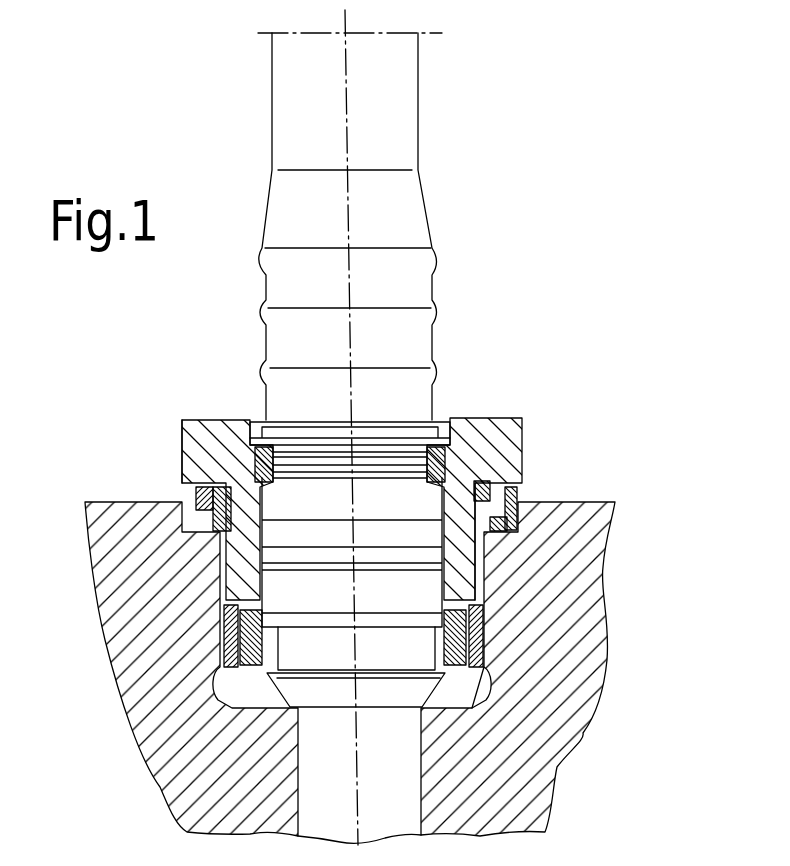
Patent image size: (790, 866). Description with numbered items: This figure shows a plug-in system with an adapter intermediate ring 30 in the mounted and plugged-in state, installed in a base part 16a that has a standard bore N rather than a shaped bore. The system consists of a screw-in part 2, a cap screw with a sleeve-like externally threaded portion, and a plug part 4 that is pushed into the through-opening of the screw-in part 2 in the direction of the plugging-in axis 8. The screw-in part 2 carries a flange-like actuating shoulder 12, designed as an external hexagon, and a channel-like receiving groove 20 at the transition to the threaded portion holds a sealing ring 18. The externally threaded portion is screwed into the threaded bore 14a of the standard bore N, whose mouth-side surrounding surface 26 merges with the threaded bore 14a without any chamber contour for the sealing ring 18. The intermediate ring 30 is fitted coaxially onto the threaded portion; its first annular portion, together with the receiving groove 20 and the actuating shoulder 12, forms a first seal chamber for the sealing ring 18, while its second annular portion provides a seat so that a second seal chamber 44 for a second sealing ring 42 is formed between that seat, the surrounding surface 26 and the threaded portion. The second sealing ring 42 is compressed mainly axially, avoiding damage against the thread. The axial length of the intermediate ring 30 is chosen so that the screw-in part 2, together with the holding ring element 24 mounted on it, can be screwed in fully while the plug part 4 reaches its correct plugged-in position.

The plugging-in axis 8 is at (352, 283).
The plug part 4 is at (326, 486).
The screw-in part 2 is at (488, 414).
The actuating shoulder 12 is at (188, 420).
The sealing ring 18 is at (483, 468).
The receiving groove 20 is at (464, 420).
The intermediate ring 30 is at (518, 492).
The base part 16a is at (608, 500).
The surrounding surface 26 is at (505, 520).
The second seal chamber 44 is at (493, 518).
The threaded bore 14a is at (491, 622).
The second sealing ring 42 is at (212, 532).
The holding ring element 24 is at (239, 673).
The standard bore N is at (480, 709).